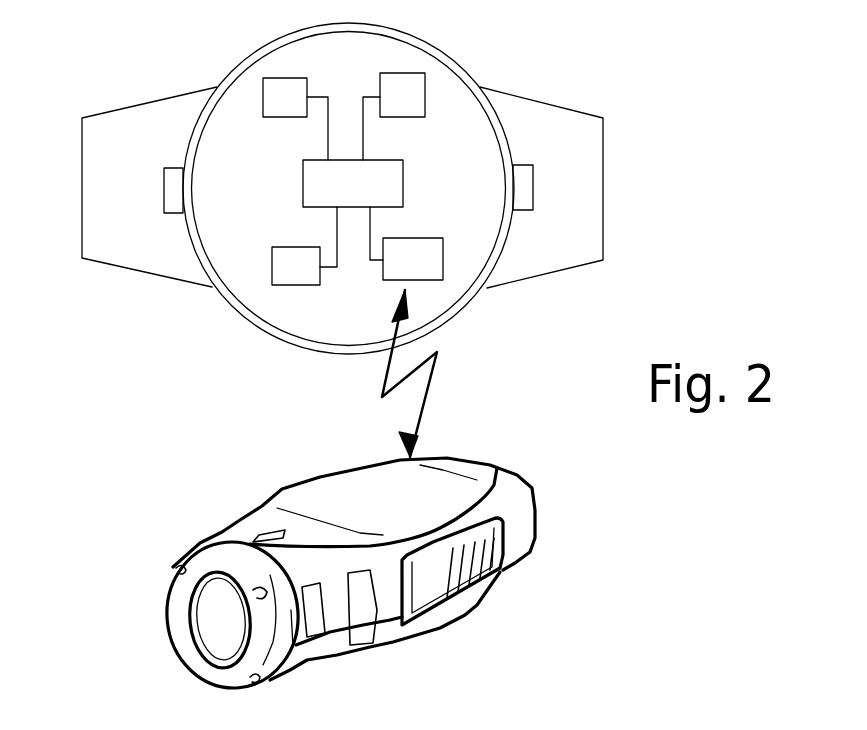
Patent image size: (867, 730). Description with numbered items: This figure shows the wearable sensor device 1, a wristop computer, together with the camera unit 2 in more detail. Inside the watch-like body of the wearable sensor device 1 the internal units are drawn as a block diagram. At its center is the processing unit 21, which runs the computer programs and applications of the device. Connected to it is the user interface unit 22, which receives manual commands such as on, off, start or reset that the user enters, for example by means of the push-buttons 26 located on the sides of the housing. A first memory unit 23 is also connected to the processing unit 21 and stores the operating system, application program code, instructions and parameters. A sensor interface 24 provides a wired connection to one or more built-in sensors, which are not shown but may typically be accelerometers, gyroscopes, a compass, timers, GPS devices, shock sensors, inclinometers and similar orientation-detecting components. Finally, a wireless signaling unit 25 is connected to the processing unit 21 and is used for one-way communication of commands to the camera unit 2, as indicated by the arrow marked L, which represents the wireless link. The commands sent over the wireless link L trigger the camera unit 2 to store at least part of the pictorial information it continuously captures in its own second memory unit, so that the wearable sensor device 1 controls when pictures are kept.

The wearable sensor device 1 is at (215, 72).
The camera unit 2 is at (233, 517).
The processing unit 21 is at (353, 183).
The user interface unit 22 is at (295, 119).
The first memory unit 23 is at (394, 116).
The sensor interface 24 is at (304, 246).
The wireless signaling unit 25 is at (406, 243).
The push-buttons 26 is at (538, 165).
The wireless link L is at (420, 423).